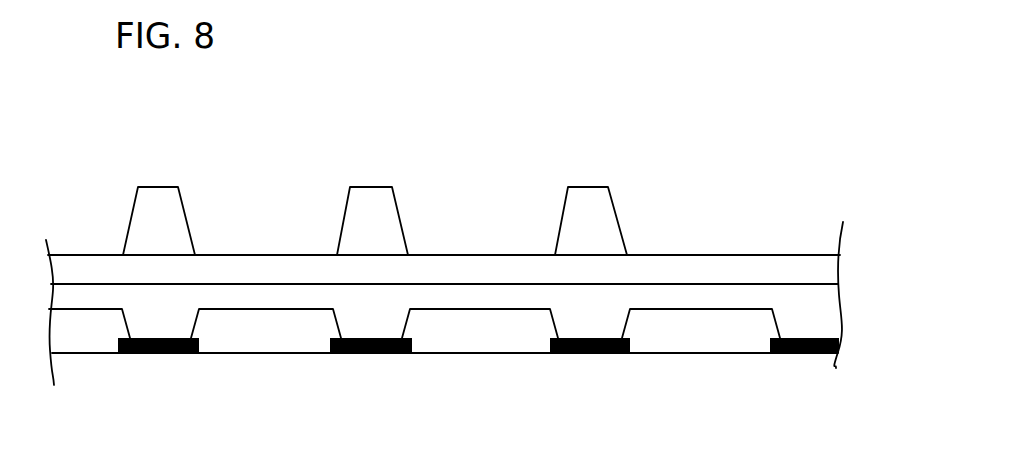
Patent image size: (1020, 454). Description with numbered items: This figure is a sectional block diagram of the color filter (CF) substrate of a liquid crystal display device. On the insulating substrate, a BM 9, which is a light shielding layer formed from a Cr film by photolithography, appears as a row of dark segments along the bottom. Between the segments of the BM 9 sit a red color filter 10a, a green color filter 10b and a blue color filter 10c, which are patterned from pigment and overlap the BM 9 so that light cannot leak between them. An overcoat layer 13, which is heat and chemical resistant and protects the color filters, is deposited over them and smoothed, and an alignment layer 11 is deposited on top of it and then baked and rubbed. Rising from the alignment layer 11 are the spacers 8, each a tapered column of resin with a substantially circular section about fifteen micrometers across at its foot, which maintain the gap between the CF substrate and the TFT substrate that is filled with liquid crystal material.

The spacer 8 is at (165, 186).
The BM 9 is at (166, 355).
The red color filter 10a is at (253, 310).
The green color filter 10b is at (463, 310).
The blue color filter 10c is at (693, 310).
The alignment layer 11 is at (825, 267).
The overcoat layer 13 is at (832, 315).